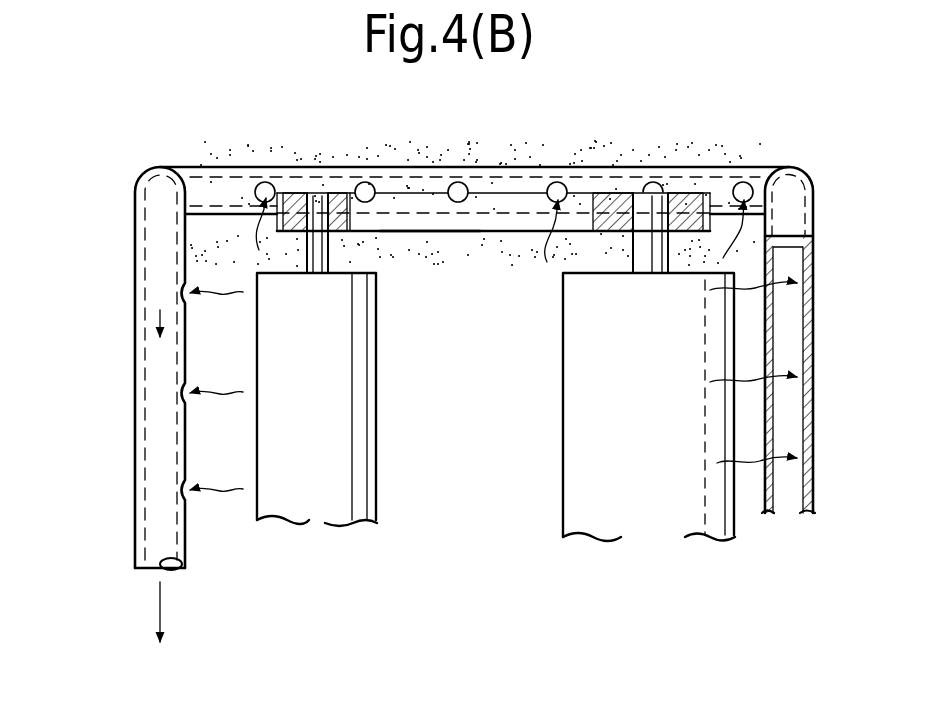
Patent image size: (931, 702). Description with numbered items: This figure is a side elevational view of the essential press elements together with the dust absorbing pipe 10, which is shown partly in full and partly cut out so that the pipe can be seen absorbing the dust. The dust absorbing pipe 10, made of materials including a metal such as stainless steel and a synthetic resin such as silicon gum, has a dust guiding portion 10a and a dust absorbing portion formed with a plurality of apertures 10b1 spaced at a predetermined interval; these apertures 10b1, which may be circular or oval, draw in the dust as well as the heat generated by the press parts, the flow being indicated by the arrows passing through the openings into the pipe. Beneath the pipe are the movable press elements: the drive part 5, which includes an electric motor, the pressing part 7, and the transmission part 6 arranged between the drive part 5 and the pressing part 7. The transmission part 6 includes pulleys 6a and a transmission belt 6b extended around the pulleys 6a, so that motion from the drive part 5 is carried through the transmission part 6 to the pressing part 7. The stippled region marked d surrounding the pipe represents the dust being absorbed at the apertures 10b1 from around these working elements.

The dust absorbing pipe 10 is at (778, 152).
The dust guiding portion 10a is at (232, 168).
The apertures 10b1 is at (268, 185).
The transmission part 6 is at (477, 222).
The pulleys 6a is at (342, 193).
The transmission belt 6b is at (430, 233).
The drive part 5 is at (358, 403).
The pressing part 7 is at (562, 443).
The gap region d is at (475, 202).